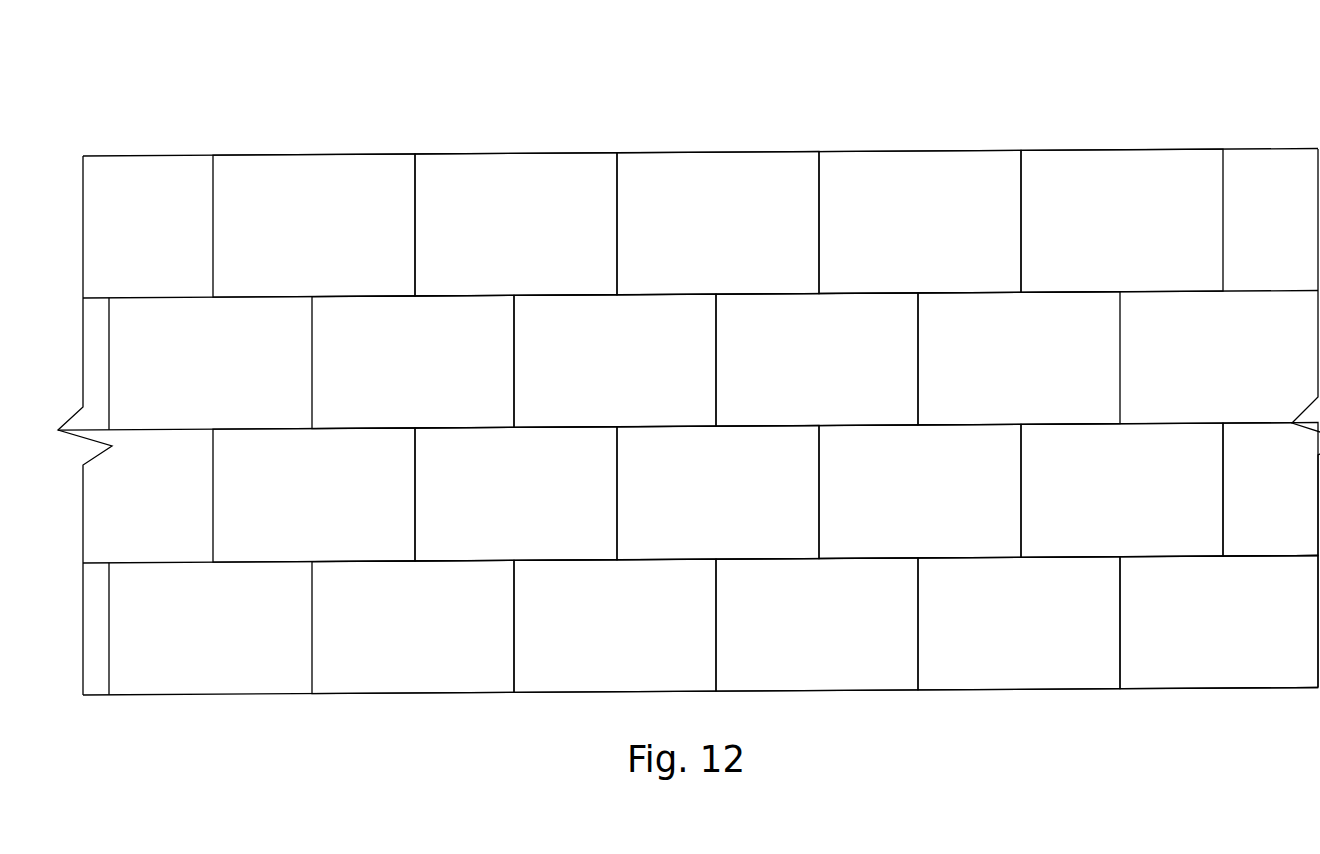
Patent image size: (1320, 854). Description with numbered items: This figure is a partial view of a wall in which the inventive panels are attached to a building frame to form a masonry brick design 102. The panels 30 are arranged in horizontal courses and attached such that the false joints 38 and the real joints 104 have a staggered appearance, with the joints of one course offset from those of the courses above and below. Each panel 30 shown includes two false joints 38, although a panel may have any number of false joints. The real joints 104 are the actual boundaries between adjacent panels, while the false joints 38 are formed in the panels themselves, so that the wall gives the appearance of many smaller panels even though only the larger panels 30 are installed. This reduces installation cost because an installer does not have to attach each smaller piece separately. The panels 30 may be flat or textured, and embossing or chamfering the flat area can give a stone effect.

The masonry brick design 102 is at (958, 128).
The panel 30 is at (453, 156).
The real joint 104 is at (213, 224).
The false joint 38 is at (415, 231).